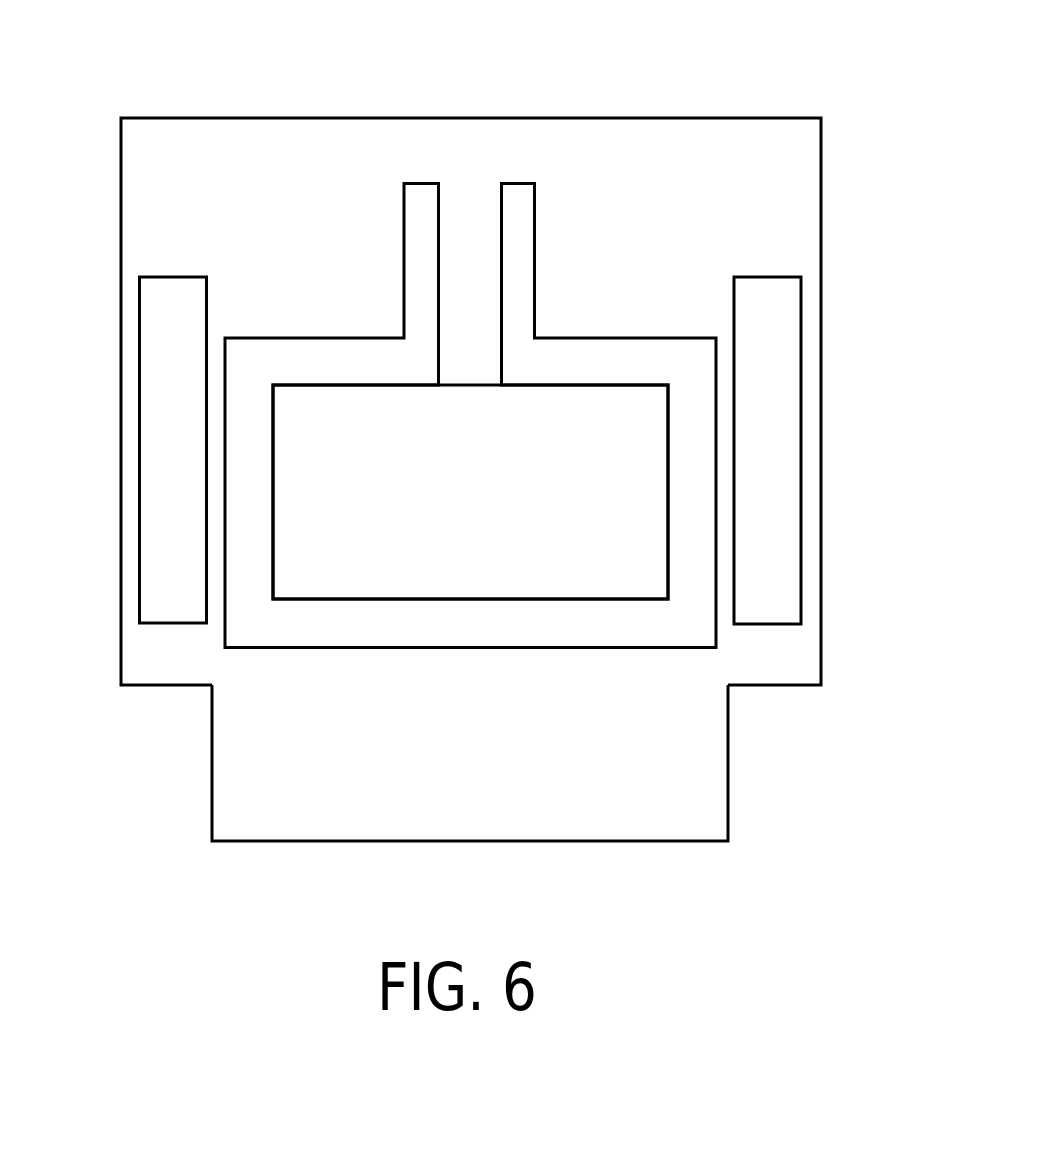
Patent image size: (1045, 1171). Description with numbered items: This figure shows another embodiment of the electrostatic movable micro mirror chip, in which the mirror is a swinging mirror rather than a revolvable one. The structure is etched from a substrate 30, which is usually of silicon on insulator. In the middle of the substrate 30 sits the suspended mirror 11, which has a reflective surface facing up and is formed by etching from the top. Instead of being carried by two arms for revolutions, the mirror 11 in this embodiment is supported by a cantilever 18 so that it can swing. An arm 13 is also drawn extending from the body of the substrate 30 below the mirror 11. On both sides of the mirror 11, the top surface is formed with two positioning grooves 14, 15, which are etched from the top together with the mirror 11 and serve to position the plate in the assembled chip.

The substrate 30 is at (798, 220).
The arm 13 is at (472, 732).
The positioning groove 15 is at (160, 443).
The positioning groove 14 is at (767, 437).
The cantilever 18 is at (468, 245).
The mirror 11 is at (613, 508).